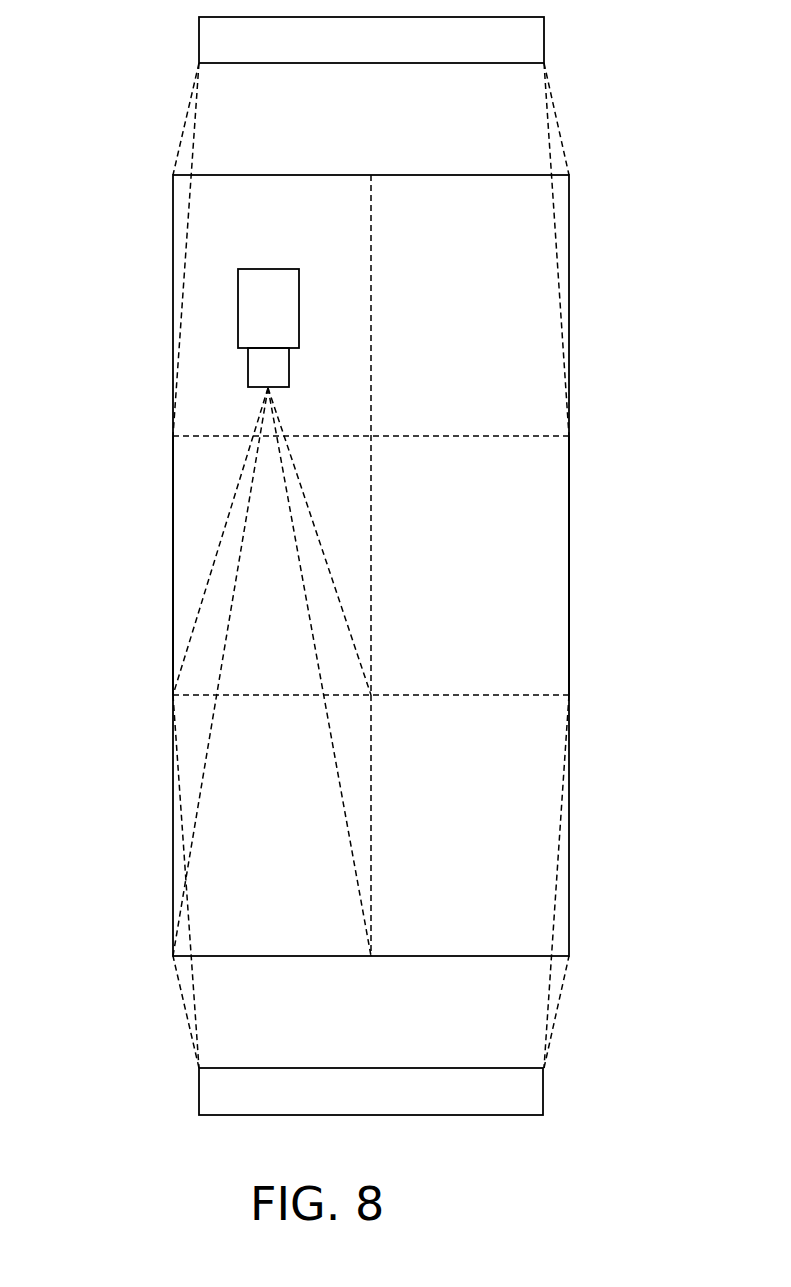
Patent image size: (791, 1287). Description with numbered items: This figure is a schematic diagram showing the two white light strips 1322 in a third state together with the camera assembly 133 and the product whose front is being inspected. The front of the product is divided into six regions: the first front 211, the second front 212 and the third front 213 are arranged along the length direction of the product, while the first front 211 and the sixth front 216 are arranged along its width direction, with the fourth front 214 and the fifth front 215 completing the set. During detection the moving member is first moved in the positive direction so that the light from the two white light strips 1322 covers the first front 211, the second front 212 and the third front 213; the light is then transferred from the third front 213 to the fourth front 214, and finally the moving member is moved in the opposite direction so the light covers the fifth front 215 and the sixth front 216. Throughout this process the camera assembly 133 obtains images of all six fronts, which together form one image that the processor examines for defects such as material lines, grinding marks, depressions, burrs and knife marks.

The white light strip 1322 is at (227, 42).
The third front 213 is at (192, 248).
The fourth front 214 is at (555, 255).
The camera assembly 133 is at (248, 318).
The second front 212 is at (192, 573).
The fifth front 215 is at (555, 580).
The first front 211 is at (192, 715).
The sixth front 216 is at (555, 905).